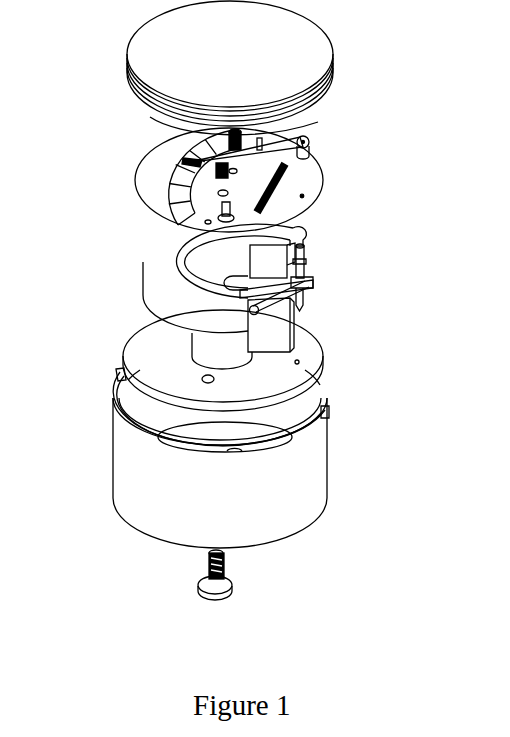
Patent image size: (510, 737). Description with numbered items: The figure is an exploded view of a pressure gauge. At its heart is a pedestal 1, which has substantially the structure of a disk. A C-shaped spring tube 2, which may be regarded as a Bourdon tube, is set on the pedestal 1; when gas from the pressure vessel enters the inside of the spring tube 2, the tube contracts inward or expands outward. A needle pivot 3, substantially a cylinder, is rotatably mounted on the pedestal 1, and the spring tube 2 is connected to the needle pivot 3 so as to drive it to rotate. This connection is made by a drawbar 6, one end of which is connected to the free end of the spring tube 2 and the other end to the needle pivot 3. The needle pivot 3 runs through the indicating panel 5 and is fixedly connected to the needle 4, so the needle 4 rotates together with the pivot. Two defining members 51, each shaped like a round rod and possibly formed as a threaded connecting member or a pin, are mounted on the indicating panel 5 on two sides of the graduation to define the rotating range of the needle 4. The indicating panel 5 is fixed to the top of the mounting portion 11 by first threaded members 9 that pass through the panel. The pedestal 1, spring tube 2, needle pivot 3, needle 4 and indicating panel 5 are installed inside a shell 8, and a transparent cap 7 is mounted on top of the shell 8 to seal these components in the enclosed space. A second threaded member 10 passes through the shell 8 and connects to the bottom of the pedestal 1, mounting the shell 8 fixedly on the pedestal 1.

The pedestal 1 is at (152, 357).
The spring tube 2 is at (152, 285).
The needle pivot 3 is at (303, 263).
The needle 4 is at (313, 138).
The indicating panel 5 is at (310, 188).
The defining member 51 is at (135, 190).
The drawbar 6 is at (303, 298).
The transparent cap 7 is at (307, 57).
The shell 8 is at (305, 490).
The first threaded member 9 is at (167, 130).
The second threaded member 10 is at (228, 575).
The mounting portion 11 is at (300, 345).